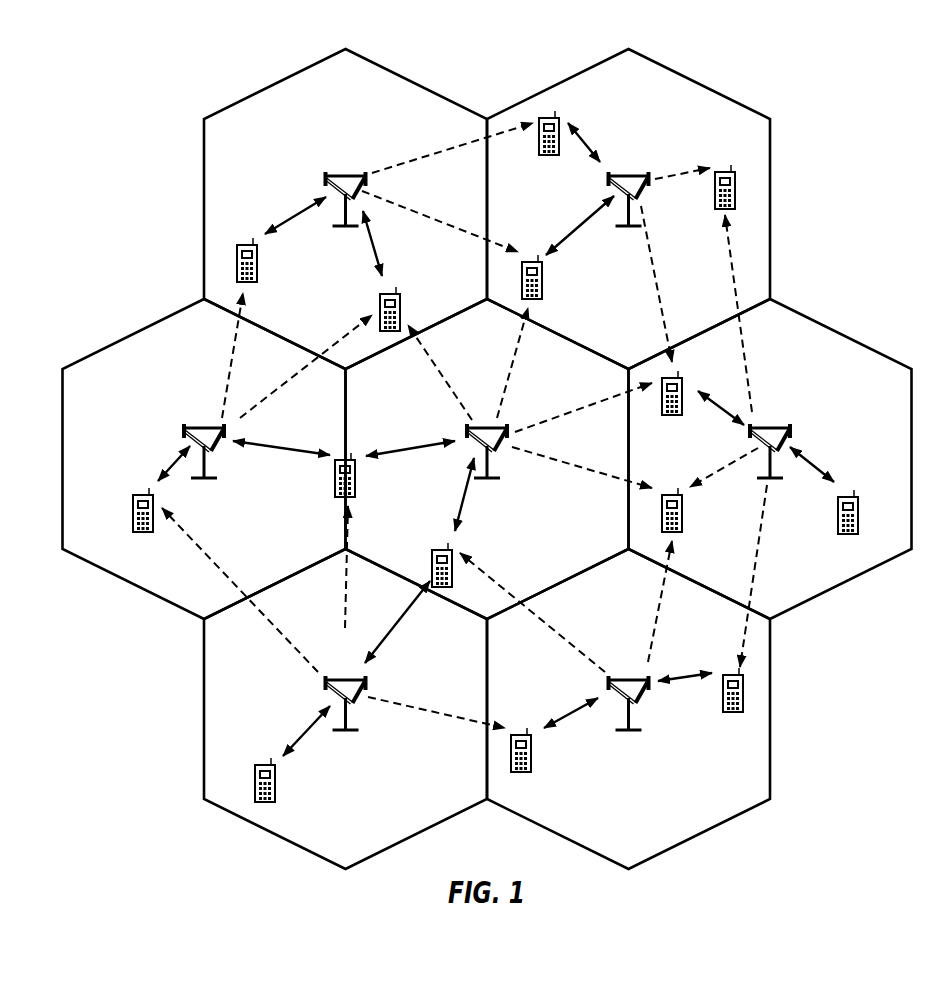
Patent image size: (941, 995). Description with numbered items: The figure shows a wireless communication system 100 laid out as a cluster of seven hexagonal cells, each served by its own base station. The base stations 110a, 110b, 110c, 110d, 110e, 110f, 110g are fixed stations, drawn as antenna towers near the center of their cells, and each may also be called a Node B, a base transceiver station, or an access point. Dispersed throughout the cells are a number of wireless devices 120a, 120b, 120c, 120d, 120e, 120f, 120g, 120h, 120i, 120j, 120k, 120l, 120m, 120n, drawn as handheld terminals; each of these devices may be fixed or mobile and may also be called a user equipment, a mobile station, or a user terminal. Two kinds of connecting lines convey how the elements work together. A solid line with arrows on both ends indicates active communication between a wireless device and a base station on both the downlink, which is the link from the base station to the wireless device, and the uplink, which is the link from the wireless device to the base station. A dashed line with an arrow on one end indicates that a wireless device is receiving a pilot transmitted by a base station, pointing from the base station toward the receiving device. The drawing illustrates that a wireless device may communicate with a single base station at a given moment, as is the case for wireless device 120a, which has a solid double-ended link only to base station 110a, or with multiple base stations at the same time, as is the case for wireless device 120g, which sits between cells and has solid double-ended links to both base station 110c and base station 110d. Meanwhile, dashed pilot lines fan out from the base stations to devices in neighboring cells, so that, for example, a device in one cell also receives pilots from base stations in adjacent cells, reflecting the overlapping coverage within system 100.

The wireless communication system 100 is at (868, 77).
The base station 110a is at (348, 174).
The base station 110b is at (630, 174).
The base station 110c is at (205, 426).
The base station 110d is at (487, 426).
The base station 110e is at (771, 426).
The base station 110f is at (347, 678).
The base station 110g is at (629, 678).
The wireless device 120a is at (252, 240).
The wireless device 120b is at (396, 290).
The wireless device 120c is at (537, 256).
The wireless device 120d is at (740, 157).
The wireless device 120e is at (539, 128).
The wireless device 120f is at (133, 512).
The wireless device 120g is at (335, 478).
The wireless device 120h is at (447, 544).
The wireless device 120i is at (677, 489).
The wireless device 120j is at (680, 372).
The wireless device 120k is at (854, 490).
The wireless device 120l is at (271, 758).
The wireless device 120m is at (533, 755).
The wireless device 120n is at (745, 659).